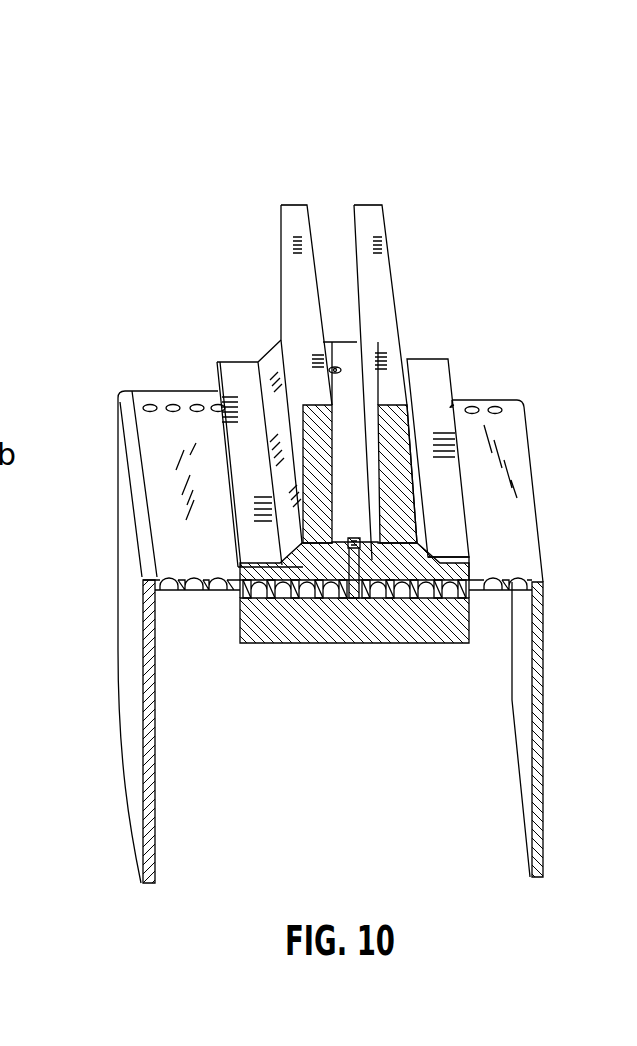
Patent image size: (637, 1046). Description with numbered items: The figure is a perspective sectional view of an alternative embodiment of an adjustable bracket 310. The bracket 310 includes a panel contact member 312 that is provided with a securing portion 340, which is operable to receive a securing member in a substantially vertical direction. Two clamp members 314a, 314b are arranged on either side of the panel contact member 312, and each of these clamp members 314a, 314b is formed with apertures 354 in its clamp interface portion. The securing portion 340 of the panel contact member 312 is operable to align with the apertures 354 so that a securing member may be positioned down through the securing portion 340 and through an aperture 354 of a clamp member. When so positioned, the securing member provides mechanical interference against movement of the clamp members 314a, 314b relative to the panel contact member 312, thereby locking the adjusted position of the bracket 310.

The bracket 310 is at (497, 162).
The panel contact member 312 is at (205, 256).
The clamp member 314a is at (102, 566).
The clamp member 314b is at (539, 464).
The securing portion 340 is at (340, 366).
The apertures 354 is at (174, 402).